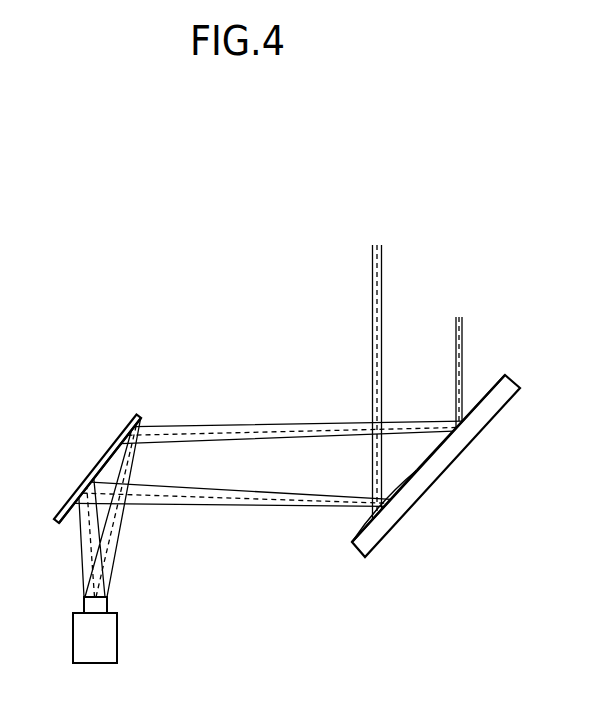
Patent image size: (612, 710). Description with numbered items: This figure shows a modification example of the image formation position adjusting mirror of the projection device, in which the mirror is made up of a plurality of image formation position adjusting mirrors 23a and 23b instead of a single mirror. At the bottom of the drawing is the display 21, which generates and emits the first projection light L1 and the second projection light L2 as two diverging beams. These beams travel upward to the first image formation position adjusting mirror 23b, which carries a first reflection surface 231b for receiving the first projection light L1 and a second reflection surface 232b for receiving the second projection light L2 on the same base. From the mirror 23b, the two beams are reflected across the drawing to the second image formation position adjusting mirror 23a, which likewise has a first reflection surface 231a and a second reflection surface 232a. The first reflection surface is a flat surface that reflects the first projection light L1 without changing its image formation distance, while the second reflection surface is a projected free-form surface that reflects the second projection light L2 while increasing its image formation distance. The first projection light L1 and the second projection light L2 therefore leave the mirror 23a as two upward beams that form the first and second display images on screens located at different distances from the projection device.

The display 21 is at (117, 638).
The image formation position adjusting mirror 23a is at (440, 496).
The first reflection surface 231a is at (446, 437).
The second reflection surface 232a is at (385, 500).
The image formation position adjusting mirror 23b is at (85, 445).
The first reflection surface 231b is at (117, 443).
The second reflection surface 232b is at (76, 501).
The first projection light L1 is at (458, 352).
The second projection light L2 is at (377, 290).